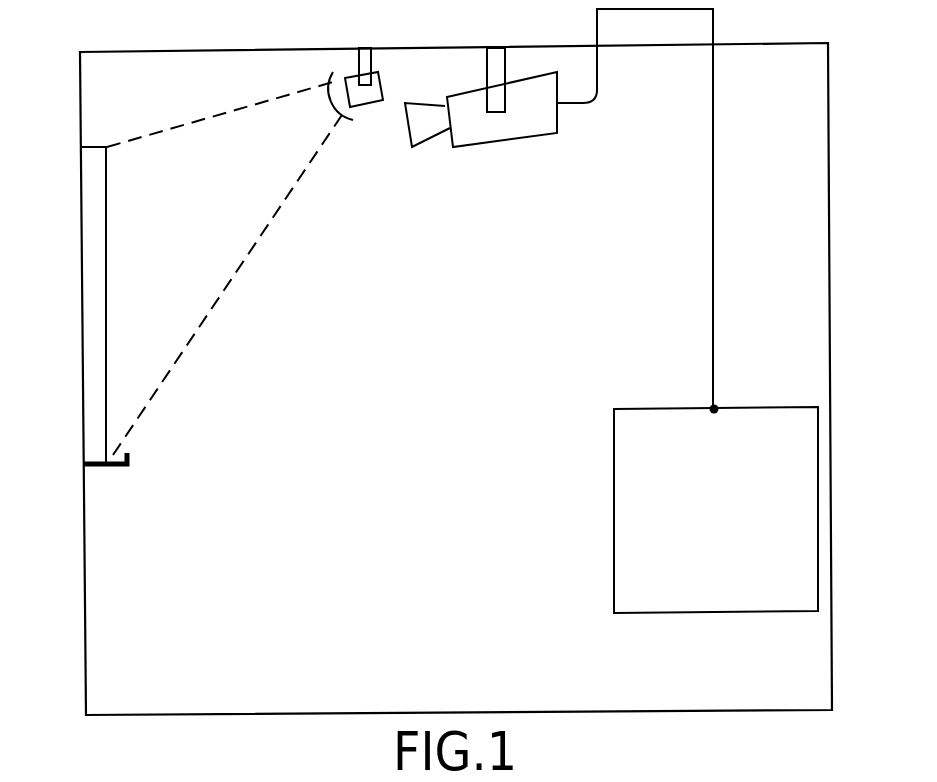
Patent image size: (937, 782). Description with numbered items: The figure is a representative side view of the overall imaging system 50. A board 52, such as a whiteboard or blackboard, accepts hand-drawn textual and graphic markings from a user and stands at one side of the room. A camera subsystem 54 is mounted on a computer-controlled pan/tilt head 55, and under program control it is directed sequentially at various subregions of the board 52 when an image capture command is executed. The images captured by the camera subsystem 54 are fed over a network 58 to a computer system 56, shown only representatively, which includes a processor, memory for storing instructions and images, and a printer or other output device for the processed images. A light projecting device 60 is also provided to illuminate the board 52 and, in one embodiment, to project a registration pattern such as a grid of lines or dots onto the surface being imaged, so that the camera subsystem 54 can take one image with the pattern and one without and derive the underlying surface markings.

The system 50 is at (143, 46).
The board 52 is at (107, 307).
The camera subsystem 54 is at (497, 133).
The pan/tilt head 55 is at (502, 62).
The computer system 56 is at (628, 485).
The network 58 is at (712, 307).
The light projecting device 60 is at (378, 84).